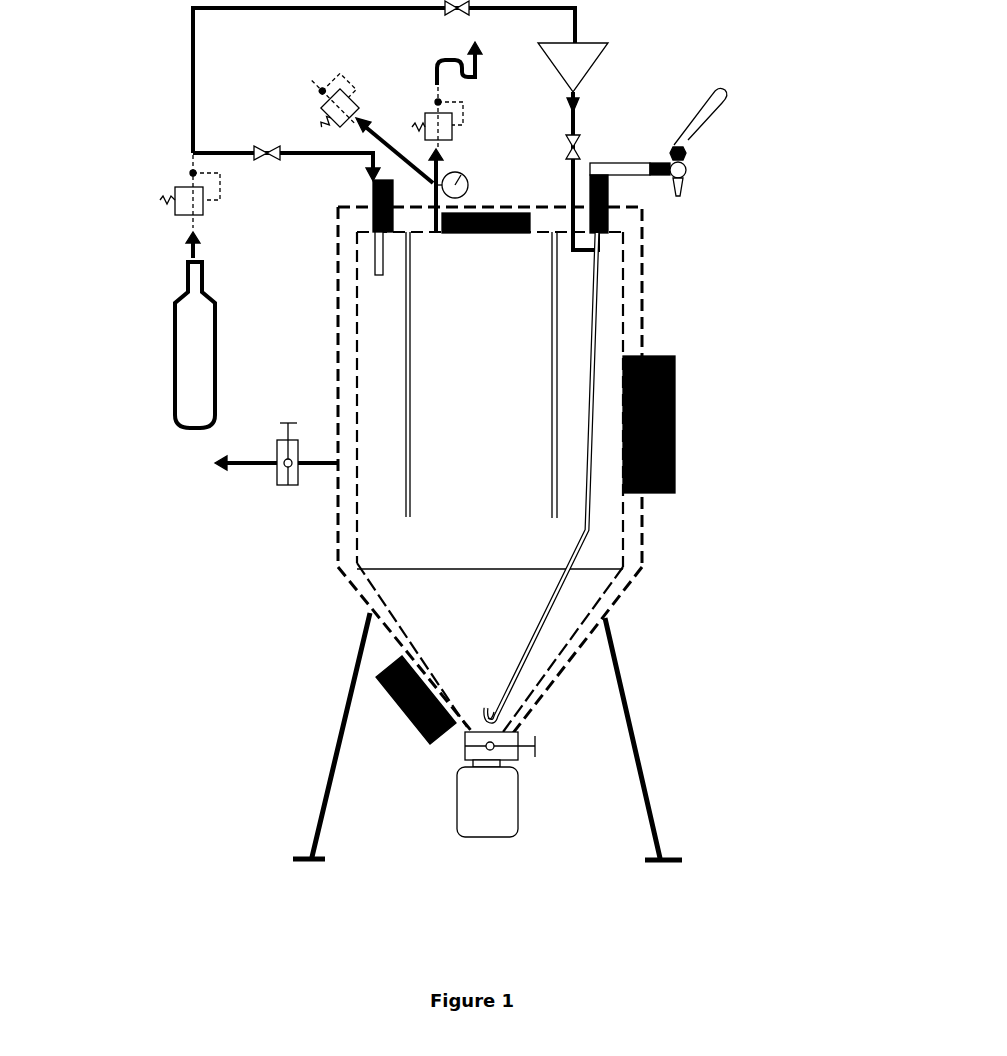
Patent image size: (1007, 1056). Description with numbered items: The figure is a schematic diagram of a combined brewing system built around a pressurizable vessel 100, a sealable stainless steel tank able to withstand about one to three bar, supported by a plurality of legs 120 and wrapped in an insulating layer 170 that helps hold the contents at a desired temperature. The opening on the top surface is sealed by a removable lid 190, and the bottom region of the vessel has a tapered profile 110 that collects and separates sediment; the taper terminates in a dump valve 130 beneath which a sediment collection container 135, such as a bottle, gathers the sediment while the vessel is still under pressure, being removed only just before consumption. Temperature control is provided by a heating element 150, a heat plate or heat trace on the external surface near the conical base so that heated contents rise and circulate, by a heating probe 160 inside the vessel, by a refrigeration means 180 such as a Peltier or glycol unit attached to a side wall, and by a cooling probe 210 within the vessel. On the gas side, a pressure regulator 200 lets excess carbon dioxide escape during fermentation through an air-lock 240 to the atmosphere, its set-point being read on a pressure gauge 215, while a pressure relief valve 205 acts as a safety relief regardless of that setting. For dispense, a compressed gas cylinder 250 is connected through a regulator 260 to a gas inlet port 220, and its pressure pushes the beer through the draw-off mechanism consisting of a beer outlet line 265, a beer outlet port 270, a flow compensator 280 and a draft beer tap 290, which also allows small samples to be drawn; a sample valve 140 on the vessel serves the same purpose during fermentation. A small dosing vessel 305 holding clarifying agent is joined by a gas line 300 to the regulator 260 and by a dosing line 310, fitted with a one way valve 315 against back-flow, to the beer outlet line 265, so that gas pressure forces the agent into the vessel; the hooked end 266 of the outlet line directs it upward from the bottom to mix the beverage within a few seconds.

The pressurizable vessel 100 is at (266, 597).
The tapered profile 110 is at (408, 622).
The legs 120 is at (318, 768).
The dump valve 130 is at (456, 755).
The sediment collection container 135 is at (455, 820).
The sample valve 140 is at (285, 495).
The heating element 150 is at (396, 707).
The heating probe 160 is at (414, 398).
The insulating layer 170 is at (346, 355).
The refrigeration means 180 is at (686, 415).
The removable lid 190 is at (472, 236).
The pressure regulator 200 is at (474, 124).
The pressure relief valve 205 is at (303, 103).
The cooling probe 210 is at (551, 355).
The pressure gauge 215 is at (470, 181).
The gas inlet port 220 is at (370, 190).
The air-lock 240 is at (483, 70).
The compressed gas cylinder 250 is at (166, 362).
The regulator 260 is at (140, 198).
The beer outlet line 265 is at (543, 598).
The hooked end 266 is at (483, 698).
The beer outlet port 270 is at (611, 191).
The flow compensator 280 is at (627, 162).
The draft beer tap 290 is at (695, 173).
The gas line 300 is at (323, 9).
The dosing vessel 305 is at (603, 70).
The dosing line 310 is at (578, 114).
The one way valve 315 is at (583, 146).